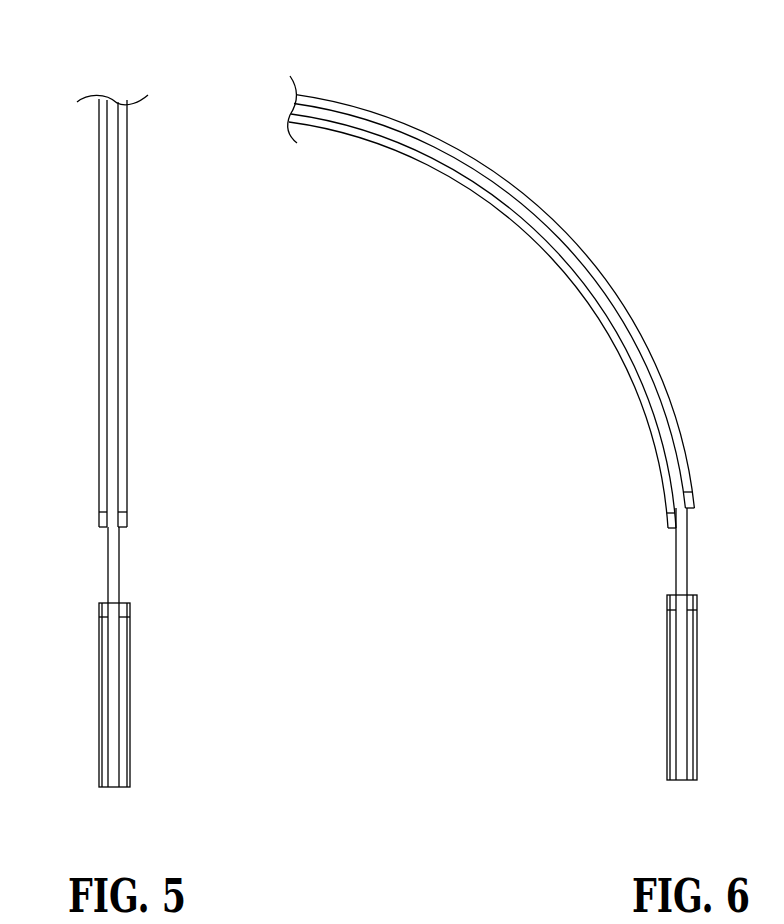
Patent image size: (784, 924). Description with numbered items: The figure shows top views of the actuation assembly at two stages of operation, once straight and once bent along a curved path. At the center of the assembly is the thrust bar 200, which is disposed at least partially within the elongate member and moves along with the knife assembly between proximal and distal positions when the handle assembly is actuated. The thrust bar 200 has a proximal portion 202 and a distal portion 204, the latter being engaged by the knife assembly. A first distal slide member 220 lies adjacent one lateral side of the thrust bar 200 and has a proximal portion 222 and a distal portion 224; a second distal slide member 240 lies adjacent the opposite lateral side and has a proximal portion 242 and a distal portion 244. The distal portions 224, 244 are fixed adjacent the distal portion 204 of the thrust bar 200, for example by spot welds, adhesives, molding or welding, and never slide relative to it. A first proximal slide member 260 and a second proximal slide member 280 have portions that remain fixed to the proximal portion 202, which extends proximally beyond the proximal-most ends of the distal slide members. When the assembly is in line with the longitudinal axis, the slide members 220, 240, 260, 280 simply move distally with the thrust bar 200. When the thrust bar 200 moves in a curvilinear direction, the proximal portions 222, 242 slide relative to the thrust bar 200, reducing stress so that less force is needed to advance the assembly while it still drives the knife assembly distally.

In FIG. 5, the thrust bar 200 is at (117, 552).
In FIG. 6, the thrust bar 200 is at (688, 553).
In FIG. 6, the proximal portion of thrust bar 202 is at (685, 794).
In FIG. 6, the distal portion of thrust bar 204 is at (276, 98).
In FIG. 5, the first distal slide member 220 is at (123, 414).
In FIG. 6, the first distal slide member 220 is at (565, 225).
In FIG. 6, the proximal portion of first distal slide member 222 is at (707, 483).
In FIG. 6, the distal portion of first distal slide member 224 is at (323, 89).
In FIG. 5, the second distal slide member 240 is at (98, 432).
In FIG. 6, the second distal slide member 240 is at (540, 243).
In FIG. 6, the proximal portion of second distal slide member 242 is at (650, 509).
In FIG. 6, the distal portion of second distal slide member 244 is at (313, 137).
In FIG. 5, the first proximal slide member 260 is at (127, 703).
In FIG. 6, the first proximal slide member 260 is at (695, 733).
In FIG. 5, the second proximal slide member 280 is at (102, 737).
In FIG. 6, the second proximal slide member 280 is at (670, 678).